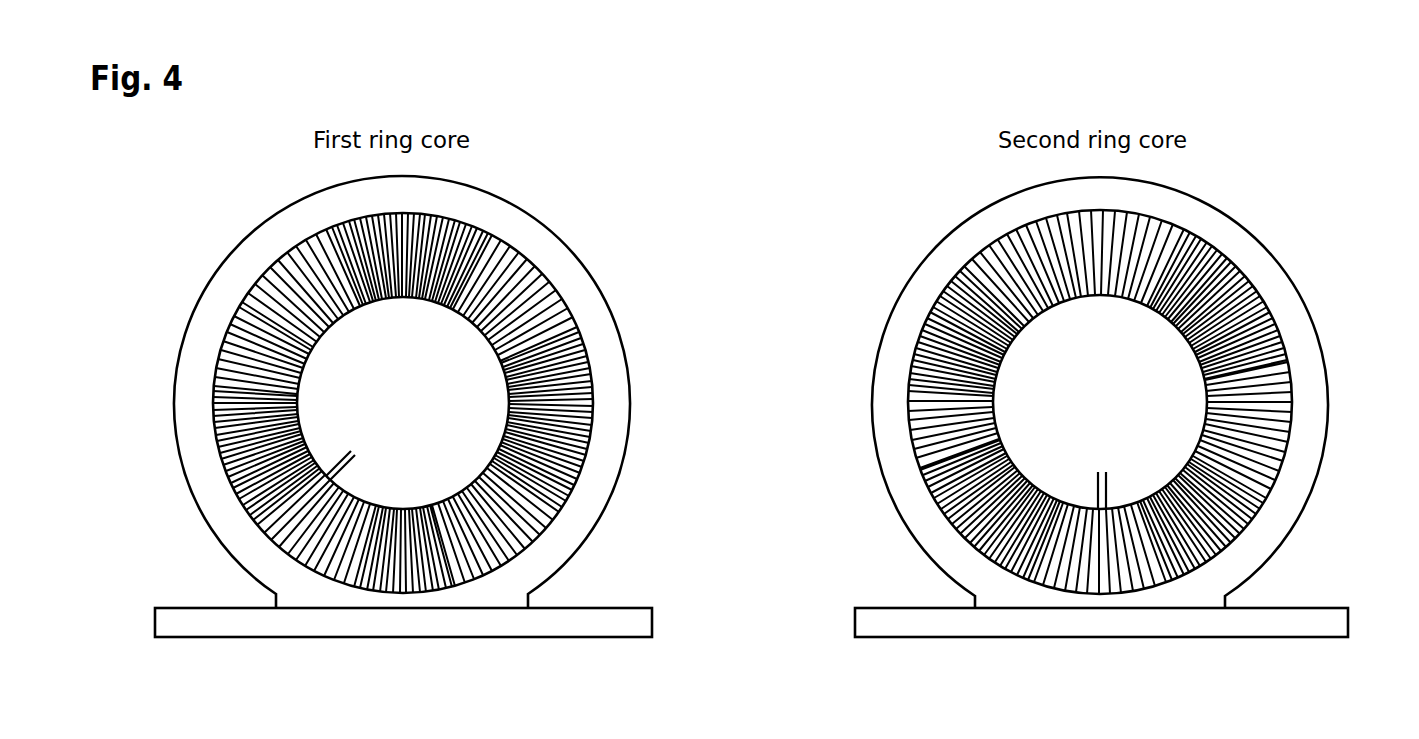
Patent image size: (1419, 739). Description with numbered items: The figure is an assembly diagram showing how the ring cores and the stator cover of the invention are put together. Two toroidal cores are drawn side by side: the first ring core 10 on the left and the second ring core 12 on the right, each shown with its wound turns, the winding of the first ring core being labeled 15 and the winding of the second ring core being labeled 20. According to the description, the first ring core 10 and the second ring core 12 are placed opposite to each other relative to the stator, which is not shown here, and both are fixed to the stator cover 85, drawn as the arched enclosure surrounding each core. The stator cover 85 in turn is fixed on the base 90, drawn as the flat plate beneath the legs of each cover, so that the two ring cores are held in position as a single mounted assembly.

The first ring core 10 is at (272, 497).
The first winding (coil) on first ring core 15 is at (322, 240).
The second ring core 12 is at (1268, 355).
The second winding (coil) on second ring core 20 is at (1253, 290).
The stator cover 85 is at (885, 406).
The base 90 is at (870, 620).